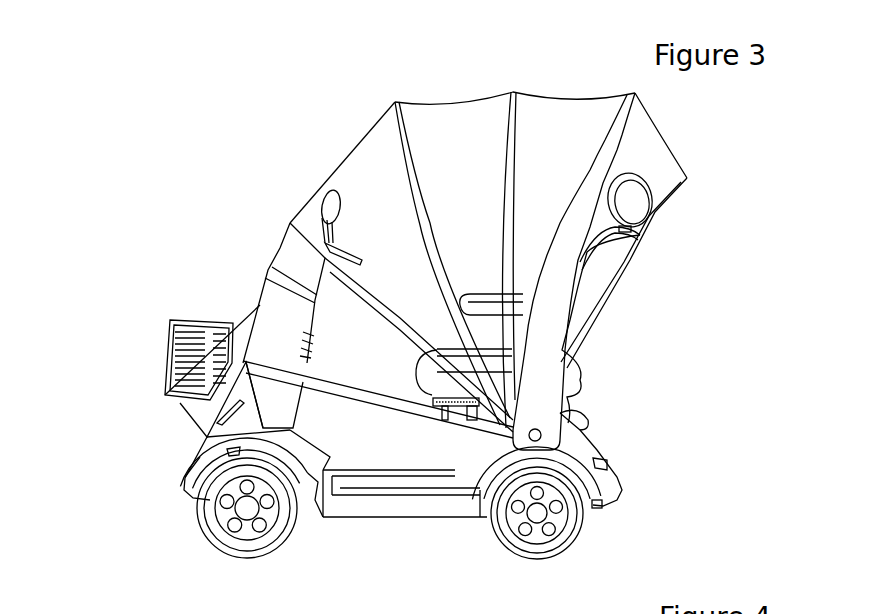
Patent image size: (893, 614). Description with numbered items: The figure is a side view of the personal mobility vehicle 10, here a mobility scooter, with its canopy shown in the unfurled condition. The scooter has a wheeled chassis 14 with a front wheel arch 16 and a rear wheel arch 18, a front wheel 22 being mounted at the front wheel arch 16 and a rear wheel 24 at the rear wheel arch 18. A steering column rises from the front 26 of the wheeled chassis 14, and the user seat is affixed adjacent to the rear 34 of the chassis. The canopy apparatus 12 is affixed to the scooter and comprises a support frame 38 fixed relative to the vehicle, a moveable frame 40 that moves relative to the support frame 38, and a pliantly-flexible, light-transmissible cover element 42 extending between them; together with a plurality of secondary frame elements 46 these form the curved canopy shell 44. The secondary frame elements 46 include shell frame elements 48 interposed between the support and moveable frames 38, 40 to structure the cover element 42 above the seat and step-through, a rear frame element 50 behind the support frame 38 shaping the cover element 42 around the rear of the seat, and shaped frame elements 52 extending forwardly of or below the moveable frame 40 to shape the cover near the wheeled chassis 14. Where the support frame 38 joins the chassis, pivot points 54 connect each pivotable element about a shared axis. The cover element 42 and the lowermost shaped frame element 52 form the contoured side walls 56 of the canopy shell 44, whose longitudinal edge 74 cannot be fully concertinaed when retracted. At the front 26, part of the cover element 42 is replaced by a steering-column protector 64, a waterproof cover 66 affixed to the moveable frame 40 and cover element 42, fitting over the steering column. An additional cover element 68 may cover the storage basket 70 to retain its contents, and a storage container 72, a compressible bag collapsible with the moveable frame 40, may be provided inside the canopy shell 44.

The personal mobility vehicle 10 is at (130, 440).
The canopy apparatus 12 is at (335, 130).
The wheeled chassis 14 is at (600, 422).
The front wheel arches 16 is at (193, 466).
The rear wheel arches 18 is at (597, 502).
The front wheels 22 is at (212, 532).
The rear wheels 24 is at (552, 545).
The front of the wheeled chassis 26 is at (150, 485).
The rear of the wheeled chassis 34 is at (617, 465).
The support frame 38 is at (593, 182).
The moveable frame 40 is at (333, 268).
The cover element 42 is at (372, 166).
The canopy shell 44 is at (323, 180).
The secondary frame elements 46 is at (452, 263).
The shell frame elements 48 is at (423, 223).
The rear frame element 50 is at (620, 283).
The shaped frame elements 52 is at (442, 420).
The pivot points 54 is at (553, 438).
The side walls 56 is at (336, 447).
The steering-column protector 64 is at (257, 298).
The waterproof cover 66 is at (291, 312).
The additional cover element 68 is at (163, 343).
The storage basket 70 is at (170, 377).
The storage container 72 is at (391, 493).
The longitudinal edge 74 is at (363, 493).